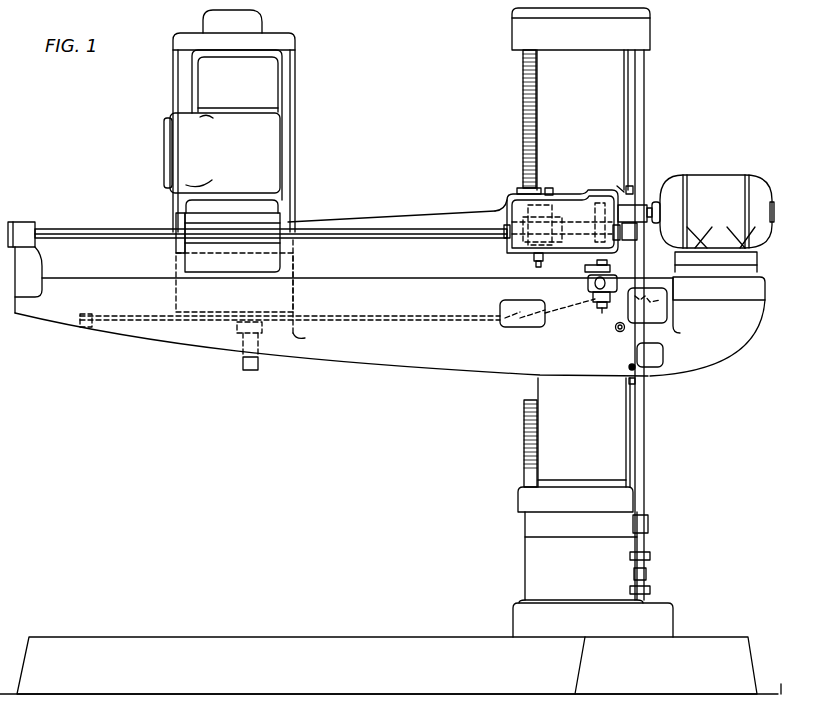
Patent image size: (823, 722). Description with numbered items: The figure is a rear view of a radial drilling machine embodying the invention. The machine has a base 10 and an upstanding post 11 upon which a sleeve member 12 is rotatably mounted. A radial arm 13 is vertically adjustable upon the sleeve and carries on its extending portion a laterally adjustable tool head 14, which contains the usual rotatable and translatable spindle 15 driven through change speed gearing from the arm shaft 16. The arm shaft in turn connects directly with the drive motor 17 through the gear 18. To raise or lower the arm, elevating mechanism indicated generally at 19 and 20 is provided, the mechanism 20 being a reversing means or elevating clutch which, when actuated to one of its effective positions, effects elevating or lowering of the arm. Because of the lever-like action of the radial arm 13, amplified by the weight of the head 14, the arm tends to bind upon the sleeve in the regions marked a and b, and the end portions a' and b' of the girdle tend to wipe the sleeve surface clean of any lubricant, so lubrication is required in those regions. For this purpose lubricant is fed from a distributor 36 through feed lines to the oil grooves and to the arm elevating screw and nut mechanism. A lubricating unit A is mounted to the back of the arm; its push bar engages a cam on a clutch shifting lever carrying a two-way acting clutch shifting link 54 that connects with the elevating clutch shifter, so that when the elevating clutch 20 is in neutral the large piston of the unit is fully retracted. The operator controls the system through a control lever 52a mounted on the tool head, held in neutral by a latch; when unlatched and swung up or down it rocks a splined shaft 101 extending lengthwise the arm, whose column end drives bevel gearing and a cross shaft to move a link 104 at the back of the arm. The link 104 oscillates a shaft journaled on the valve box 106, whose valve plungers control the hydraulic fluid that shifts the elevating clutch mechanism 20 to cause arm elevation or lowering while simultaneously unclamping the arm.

The base 10 is at (318, 620).
The upstanding post 11 is at (540, 553).
The sleeve member 12 is at (614, 436).
The radial arm 13 is at (364, 362).
The tool head 14 is at (293, 92).
The spindle 15 is at (240, 365).
The arm shaft 16 is at (366, 231).
The drive motor 17 is at (727, 190).
The gear 18 is at (600, 200).
The elevating mechanism 19 is at (524, 130).
The reversing means 20 is at (507, 206).
The distributor 36 is at (552, 190).
The clutch shifting link 54 is at (540, 258).
The control lever 52a is at (258, 297).
The splined shaft 101 is at (430, 318).
The link 104 is at (568, 310).
The valve box 106 is at (660, 325).
The lubricating unit A is at (588, 283).
The binding region a is at (646, 173).
The end portion of the girdle a' is at (608, 165).
The binding region b is at (511, 391).
The end portion of the girdle b' is at (511, 355).